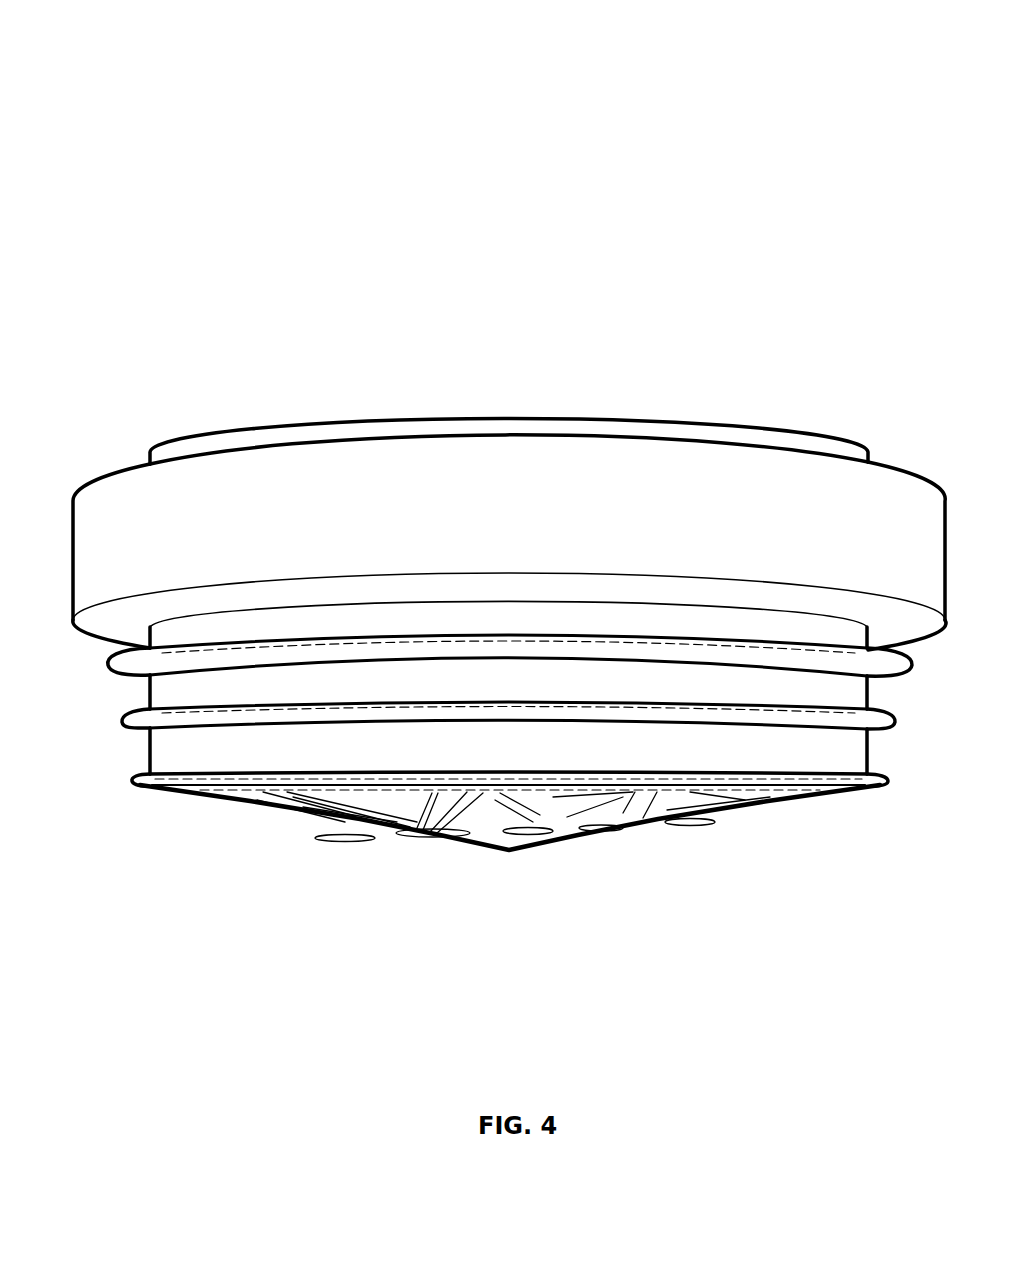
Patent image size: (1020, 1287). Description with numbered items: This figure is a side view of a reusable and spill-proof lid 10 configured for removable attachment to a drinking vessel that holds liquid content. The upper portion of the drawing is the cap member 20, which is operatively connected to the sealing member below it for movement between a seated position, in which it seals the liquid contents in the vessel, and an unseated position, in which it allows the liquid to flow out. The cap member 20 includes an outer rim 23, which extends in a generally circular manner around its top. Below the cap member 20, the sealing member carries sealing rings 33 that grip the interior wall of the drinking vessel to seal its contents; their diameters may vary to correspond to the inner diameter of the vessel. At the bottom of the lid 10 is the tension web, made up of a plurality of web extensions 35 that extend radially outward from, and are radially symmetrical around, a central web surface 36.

The lid 10 is at (100, 97).
The cap member 20 is at (453, 421).
The outer rim 23 is at (868, 458).
The sealing rings 33 is at (128, 680).
The web extensions 35 is at (655, 827).
The central web surface 36 is at (505, 851).